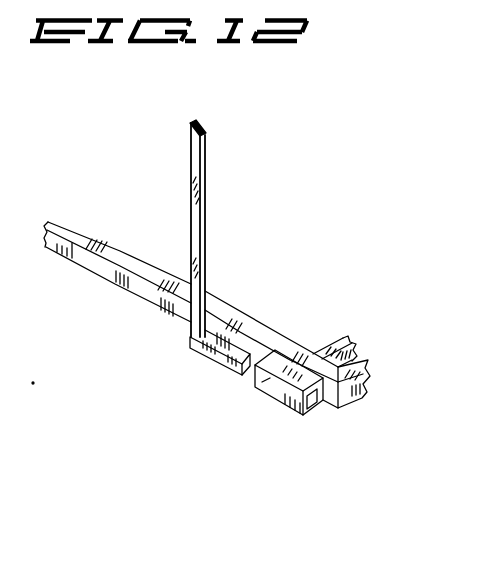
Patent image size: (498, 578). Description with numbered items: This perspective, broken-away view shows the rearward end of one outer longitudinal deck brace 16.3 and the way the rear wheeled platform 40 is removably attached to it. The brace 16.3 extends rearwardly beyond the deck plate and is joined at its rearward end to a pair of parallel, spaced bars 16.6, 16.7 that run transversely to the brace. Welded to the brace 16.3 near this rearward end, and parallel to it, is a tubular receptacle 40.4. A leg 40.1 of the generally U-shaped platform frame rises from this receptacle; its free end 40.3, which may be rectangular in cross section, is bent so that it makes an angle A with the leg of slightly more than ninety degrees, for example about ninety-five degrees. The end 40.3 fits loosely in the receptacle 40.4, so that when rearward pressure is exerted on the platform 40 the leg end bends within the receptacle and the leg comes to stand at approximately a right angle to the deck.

The rear wheeled platform 40 is at (138, 161).
The leg 40.1 is at (203, 183).
The free end of leg 40.3 is at (220, 358).
The tubular receptacle 40.4 is at (287, 404).
The outer deck brace 16.3 is at (143, 292).
The bar 16.6 is at (370, 398).
The bar 16.7 is at (323, 341).
The angle A is at (251, 352).